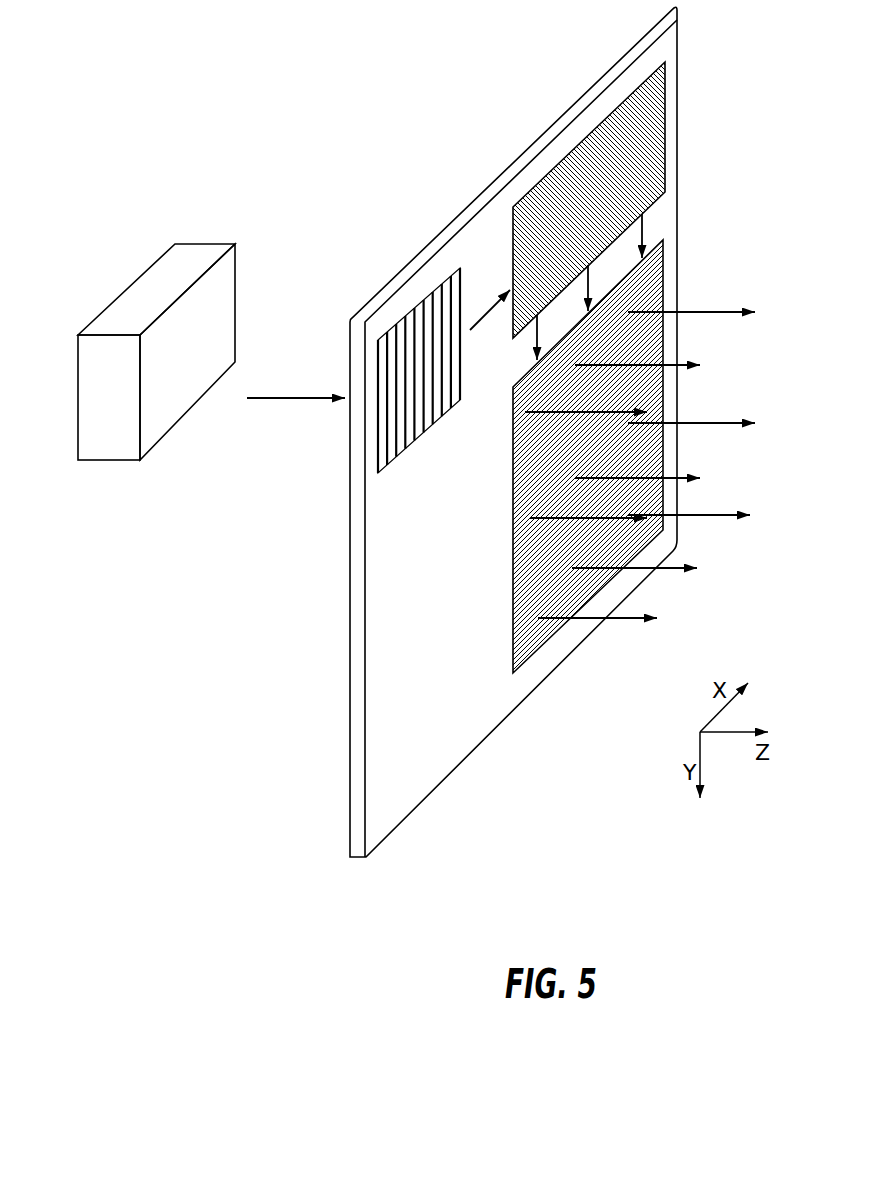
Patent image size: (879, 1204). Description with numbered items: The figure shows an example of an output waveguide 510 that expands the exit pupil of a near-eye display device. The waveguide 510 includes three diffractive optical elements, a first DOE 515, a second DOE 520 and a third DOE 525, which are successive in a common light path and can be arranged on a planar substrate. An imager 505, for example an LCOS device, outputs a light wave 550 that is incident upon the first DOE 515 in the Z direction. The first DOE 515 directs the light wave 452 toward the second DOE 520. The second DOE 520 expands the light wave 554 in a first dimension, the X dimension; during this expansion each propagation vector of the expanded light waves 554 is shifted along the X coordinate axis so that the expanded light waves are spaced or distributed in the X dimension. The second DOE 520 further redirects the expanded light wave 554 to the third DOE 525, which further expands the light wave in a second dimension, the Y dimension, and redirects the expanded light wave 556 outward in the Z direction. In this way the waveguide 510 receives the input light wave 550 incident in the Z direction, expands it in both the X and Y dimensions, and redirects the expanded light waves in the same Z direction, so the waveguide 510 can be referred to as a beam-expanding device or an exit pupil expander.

The imager 505 is at (196, 255).
The waveguide 510 is at (358, 657).
The first DOE 515 is at (378, 437).
The second DOE 520 is at (668, 128).
The third DOE 525 is at (513, 580).
The light wave 550 is at (268, 398).
The light propagating in waveguide 452 is at (485, 307).
The expanded light wave 554 is at (650, 232).
The expanded light wave 556 is at (628, 620).